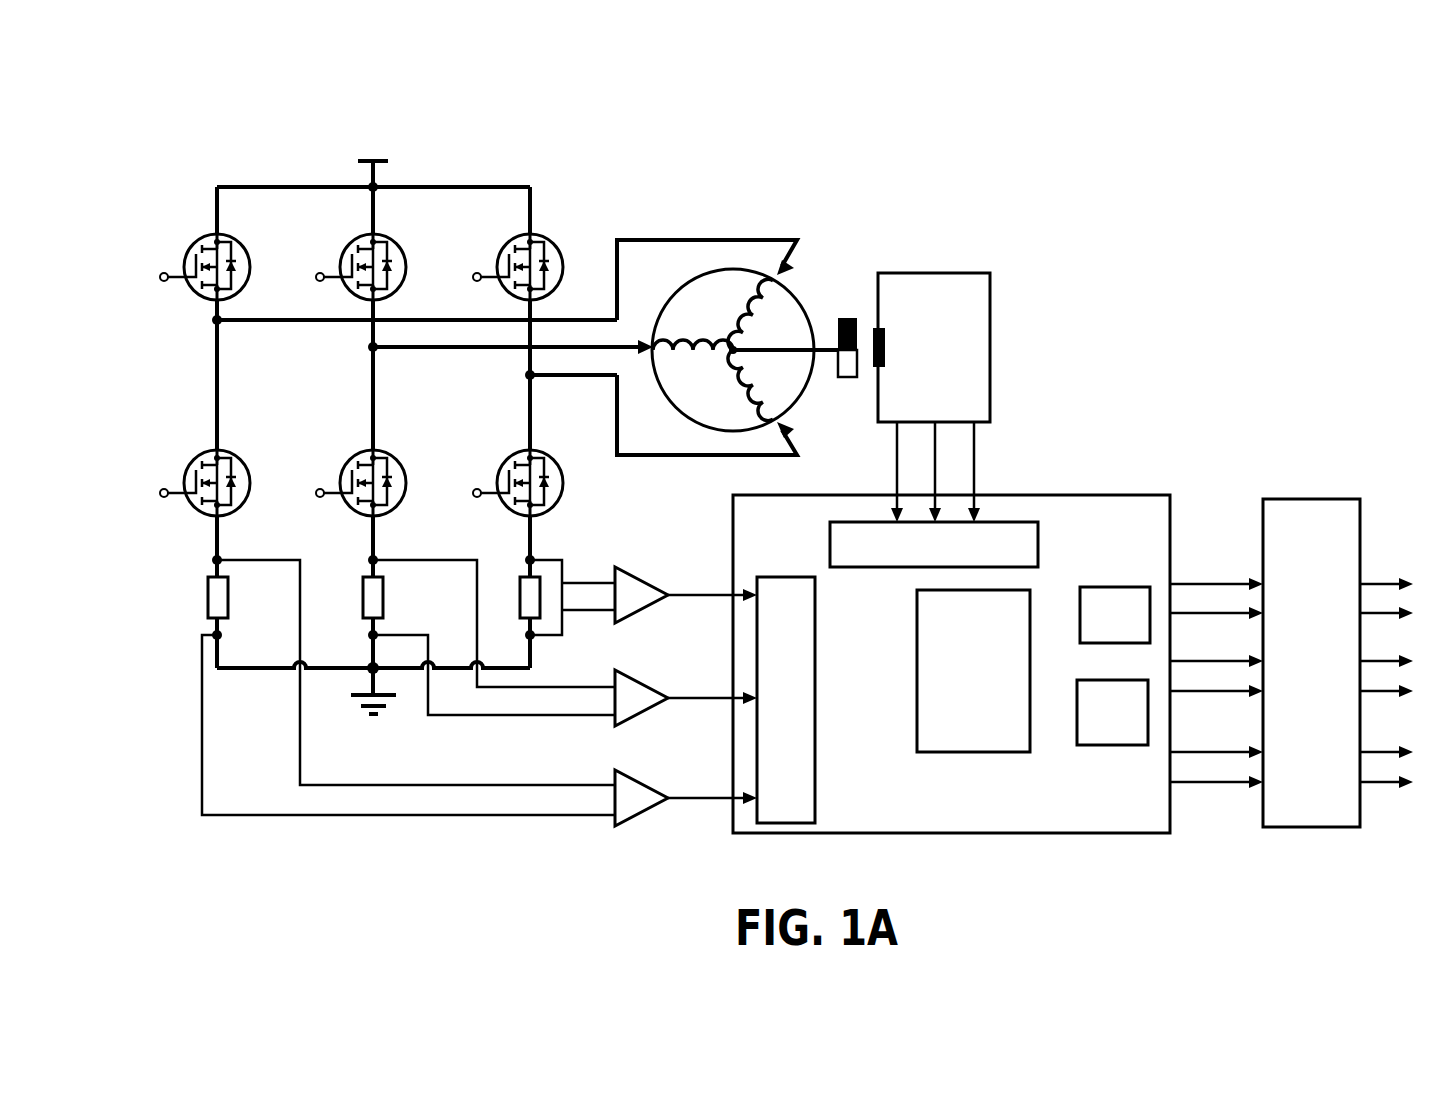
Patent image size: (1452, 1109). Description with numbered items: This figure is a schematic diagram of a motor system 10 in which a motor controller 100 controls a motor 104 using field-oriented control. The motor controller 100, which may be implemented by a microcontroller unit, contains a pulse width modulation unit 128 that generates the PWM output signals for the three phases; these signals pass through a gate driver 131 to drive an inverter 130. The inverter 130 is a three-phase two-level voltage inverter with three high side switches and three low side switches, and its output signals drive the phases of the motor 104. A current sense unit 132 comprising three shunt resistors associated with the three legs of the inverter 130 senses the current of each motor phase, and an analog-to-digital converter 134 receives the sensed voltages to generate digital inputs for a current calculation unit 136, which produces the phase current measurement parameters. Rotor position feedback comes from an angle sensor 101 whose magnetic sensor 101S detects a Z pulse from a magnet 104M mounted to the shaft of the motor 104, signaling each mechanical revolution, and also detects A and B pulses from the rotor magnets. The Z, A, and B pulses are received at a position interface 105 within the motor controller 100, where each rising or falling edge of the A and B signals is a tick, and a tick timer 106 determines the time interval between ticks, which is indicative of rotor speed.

The motor system 10 is at (1172, 130).
The inverter 130 is at (183, 383).
The current sense unit 132 is at (185, 662).
The analog-to-digital converter (ADC) 134 is at (757, 577).
The motor 104 is at (792, 252).
The magnet 104M is at (855, 316).
The angle sensor 101 is at (993, 343).
The magnetic sensor 101S is at (875, 372).
The position interface 105 is at (992, 520).
The motor controller 100 is at (1103, 494).
The pulse width modulation (PWM) unit 128 is at (917, 640).
The current calculation unit 136 is at (1135, 587).
The tick timer 106 is at (1110, 745).
The gate driver 131 is at (1310, 499).